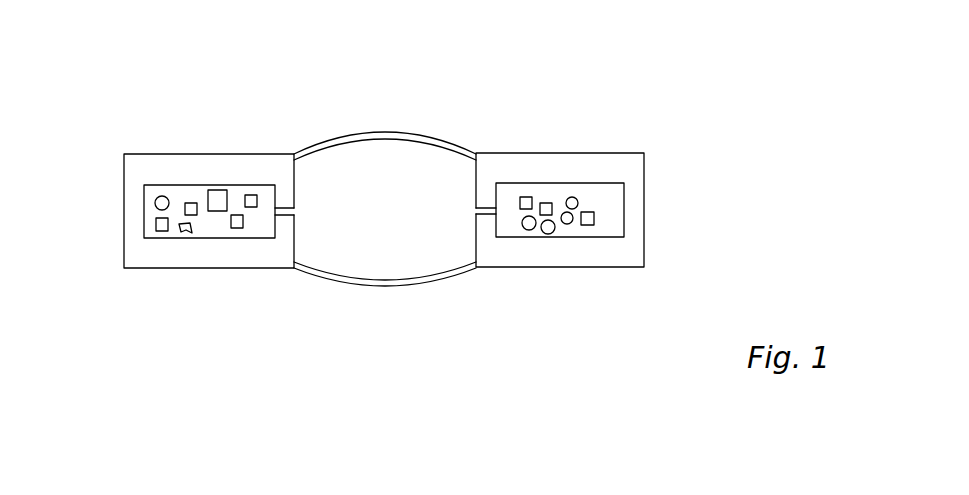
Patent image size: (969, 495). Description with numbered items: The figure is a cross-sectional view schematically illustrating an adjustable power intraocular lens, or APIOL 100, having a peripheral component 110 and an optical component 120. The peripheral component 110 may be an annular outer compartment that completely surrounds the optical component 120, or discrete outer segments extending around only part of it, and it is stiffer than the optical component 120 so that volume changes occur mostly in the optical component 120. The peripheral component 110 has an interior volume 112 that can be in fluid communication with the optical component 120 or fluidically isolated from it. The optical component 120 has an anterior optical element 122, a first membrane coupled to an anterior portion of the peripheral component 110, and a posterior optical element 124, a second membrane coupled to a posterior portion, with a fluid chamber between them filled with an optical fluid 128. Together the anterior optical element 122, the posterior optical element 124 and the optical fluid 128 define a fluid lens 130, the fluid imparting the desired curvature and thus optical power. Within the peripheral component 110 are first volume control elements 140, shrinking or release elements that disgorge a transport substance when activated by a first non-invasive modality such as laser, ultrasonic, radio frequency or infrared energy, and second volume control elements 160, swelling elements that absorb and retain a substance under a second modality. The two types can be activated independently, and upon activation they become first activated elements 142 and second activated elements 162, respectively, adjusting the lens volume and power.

The APIOL 100 is at (716, 180).
The peripheral component 110 is at (146, 302).
The interior volume 112 is at (376, 208).
The optical component 120 is at (375, 207).
The anterior optical element 122 is at (428, 136).
The posterior optical element 124 is at (455, 332).
The optical fluid 128 is at (303, 255).
The fluid lens 130 is at (349, 118).
The first volume control elements 140 is at (568, 207).
The first activated elements 142 is at (186, 228).
The second volume control elements 160 is at (588, 226).
The second activated elements 162 is at (215, 203).